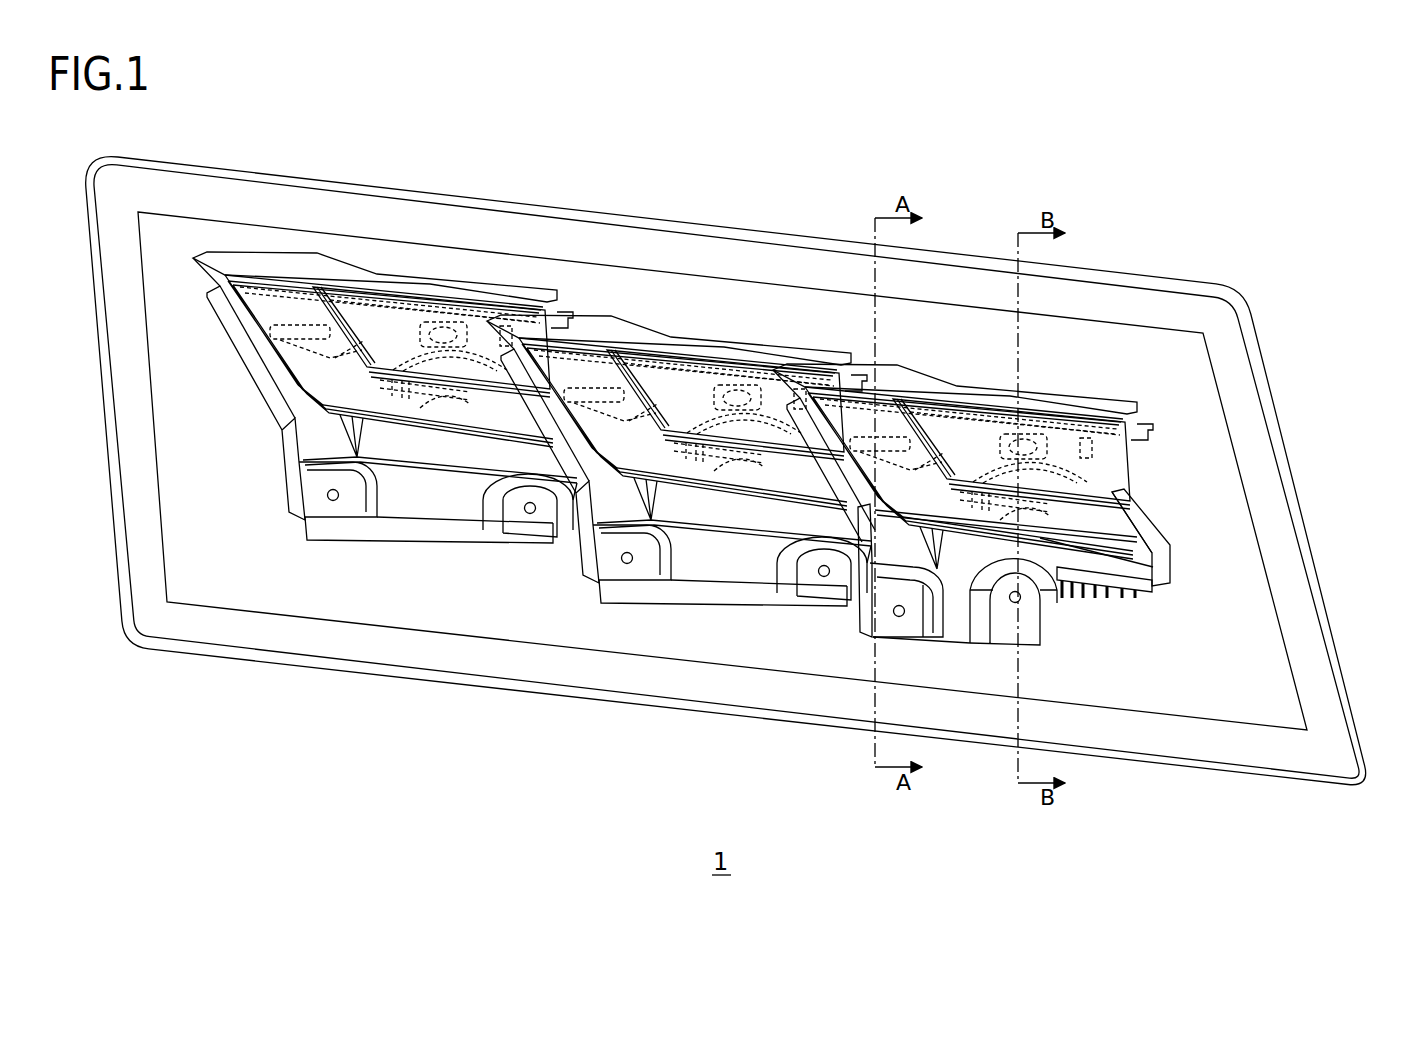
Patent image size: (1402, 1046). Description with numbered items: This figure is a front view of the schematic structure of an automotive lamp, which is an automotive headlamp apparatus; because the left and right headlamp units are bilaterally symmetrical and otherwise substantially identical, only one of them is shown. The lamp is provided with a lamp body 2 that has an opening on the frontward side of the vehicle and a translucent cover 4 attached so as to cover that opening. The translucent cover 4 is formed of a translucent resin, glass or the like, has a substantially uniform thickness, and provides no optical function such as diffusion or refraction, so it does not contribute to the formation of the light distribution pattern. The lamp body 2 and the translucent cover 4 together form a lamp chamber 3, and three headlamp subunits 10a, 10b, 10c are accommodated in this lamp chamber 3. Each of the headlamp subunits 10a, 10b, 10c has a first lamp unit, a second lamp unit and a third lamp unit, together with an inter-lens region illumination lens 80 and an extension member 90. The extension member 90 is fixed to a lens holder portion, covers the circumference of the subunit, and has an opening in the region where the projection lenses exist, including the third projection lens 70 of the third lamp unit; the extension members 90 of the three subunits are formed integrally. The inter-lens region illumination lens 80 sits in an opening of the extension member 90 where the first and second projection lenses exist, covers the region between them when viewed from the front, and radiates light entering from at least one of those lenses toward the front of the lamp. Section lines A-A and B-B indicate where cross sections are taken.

The lamp body 2 is at (1270, 784).
The lamp chamber 3 is at (165, 232).
The translucent cover 4 is at (1252, 337).
The headlamp subunit 10a is at (865, 648).
The headlamp subunit 10b is at (697, 625).
The headlamp subunit 10c is at (336, 562).
The third projection lens 70 is at (452, 315).
The inter-lens region illumination lens 80 is at (517, 430).
The extension member 90 is at (293, 262).